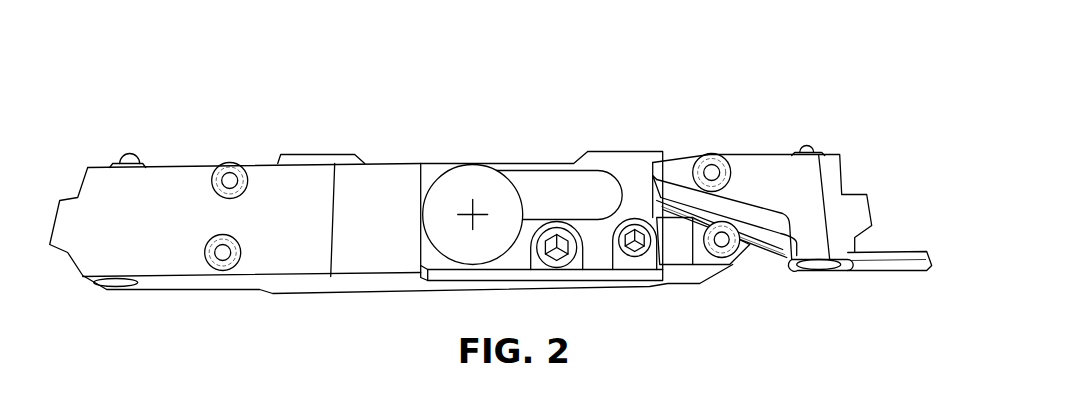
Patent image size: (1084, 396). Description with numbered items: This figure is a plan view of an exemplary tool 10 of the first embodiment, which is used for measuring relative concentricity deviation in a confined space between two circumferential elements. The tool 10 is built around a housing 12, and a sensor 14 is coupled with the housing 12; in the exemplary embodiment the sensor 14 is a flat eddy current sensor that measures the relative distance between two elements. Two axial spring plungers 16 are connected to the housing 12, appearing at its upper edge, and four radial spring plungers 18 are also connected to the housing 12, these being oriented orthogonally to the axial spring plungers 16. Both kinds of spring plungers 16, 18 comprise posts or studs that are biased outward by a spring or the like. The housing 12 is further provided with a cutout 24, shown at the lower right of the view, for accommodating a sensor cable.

The tool 10 is at (565, 115).
The housing 12 is at (578, 145).
The sensor 14 is at (478, 182).
The axial spring plunger 16 is at (131, 156).
The radial spring plunger 18 is at (212, 183).
The cutout 24 is at (762, 253).